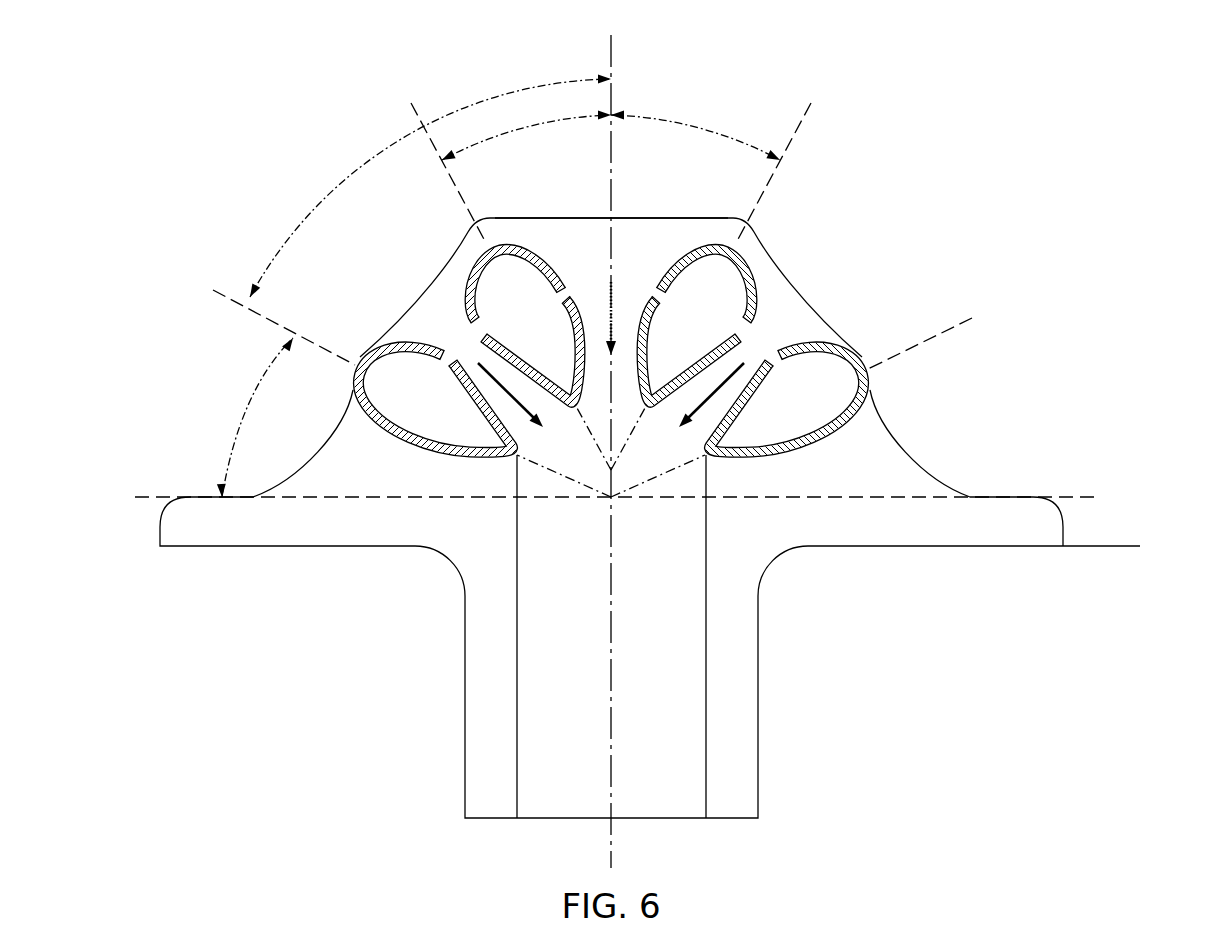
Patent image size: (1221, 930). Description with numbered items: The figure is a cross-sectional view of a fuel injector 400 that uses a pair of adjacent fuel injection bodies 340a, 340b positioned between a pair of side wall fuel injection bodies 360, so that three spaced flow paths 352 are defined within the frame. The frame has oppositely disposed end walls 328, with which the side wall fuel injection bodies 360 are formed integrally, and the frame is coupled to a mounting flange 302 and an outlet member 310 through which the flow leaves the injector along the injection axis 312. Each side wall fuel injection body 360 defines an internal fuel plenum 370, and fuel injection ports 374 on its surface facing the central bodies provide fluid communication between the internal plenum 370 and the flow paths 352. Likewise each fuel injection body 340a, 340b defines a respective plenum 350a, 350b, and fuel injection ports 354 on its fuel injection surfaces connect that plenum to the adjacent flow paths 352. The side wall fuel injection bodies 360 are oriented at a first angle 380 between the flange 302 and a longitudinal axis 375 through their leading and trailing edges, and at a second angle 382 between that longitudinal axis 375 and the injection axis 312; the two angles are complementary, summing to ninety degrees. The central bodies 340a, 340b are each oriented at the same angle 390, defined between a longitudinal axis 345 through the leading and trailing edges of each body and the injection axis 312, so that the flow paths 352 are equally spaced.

The mounting flange 302 is at (1017, 520).
The outlet member 310 is at (778, 693).
The injection axis 312 is at (614, 42).
The end wall 328 is at (542, 218).
The first fuel injection body 340a is at (455, 275).
The second fuel injection body 340b is at (767, 268).
The longitudinal axis 345 is at (410, 118).
The first plenum 350a is at (558, 333).
The second plenum 350b is at (728, 336).
The flow path 352 is at (616, 298).
The fuel injection port 354 is at (745, 333).
The side wall fuel injection body 360 is at (363, 337).
The internal fuel plenum 370 is at (446, 414).
The fuel injection port 374 is at (773, 357).
The longitudinal axis 375 is at (230, 292).
The first angle 380 is at (240, 406).
The second angle 382 is at (300, 222).
The angle 390 is at (560, 118).
The fuel injector 400 is at (1068, 99).